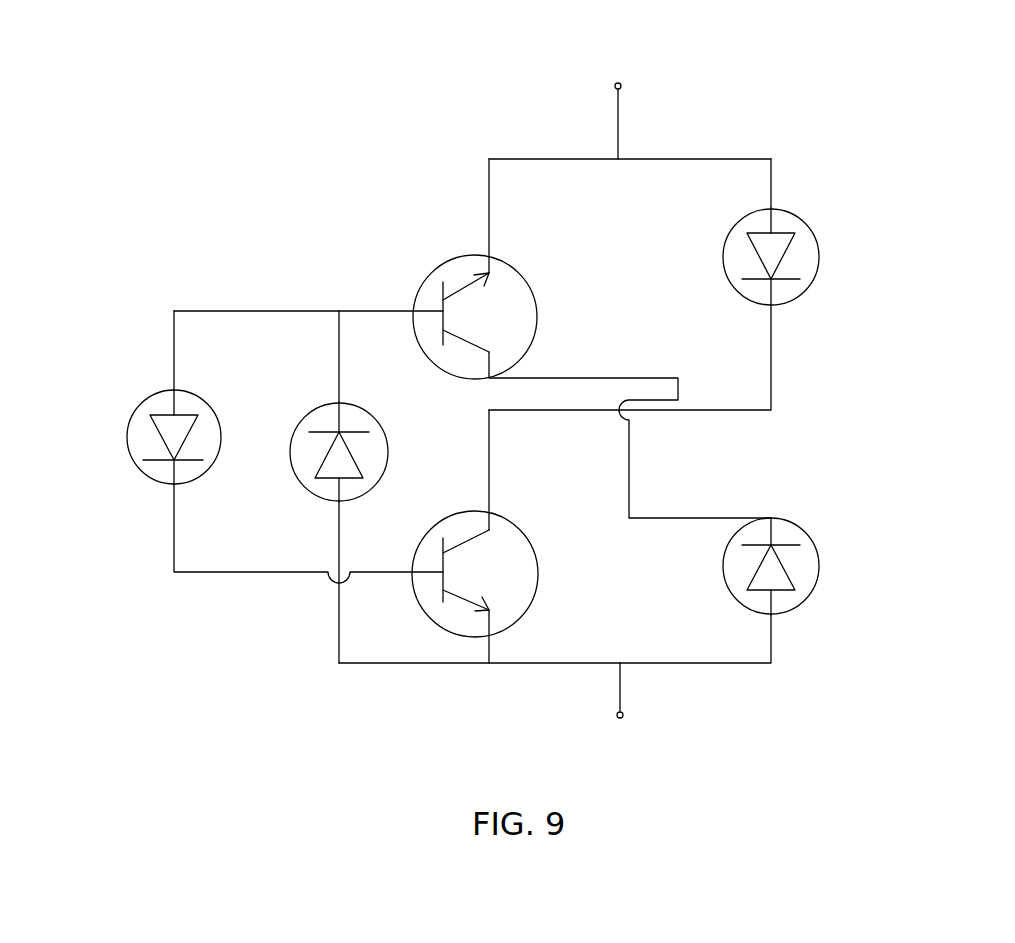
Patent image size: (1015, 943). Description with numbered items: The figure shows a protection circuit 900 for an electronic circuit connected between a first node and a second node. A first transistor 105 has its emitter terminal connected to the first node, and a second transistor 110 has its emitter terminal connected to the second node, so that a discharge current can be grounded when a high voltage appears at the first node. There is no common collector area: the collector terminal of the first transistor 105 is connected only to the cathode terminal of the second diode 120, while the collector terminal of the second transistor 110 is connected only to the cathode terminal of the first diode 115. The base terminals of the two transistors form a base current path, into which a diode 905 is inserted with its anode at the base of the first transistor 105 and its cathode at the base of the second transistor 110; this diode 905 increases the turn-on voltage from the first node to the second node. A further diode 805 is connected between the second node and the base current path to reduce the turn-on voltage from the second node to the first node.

The protection circuit 900 is at (913, 170).
The first transistor 105 is at (513, 261).
The second transistor 110 is at (537, 563).
The first diode 115 is at (793, 218).
The second diode 120 is at (805, 534).
The diode 805 is at (292, 463).
The diode 905 is at (125, 443).